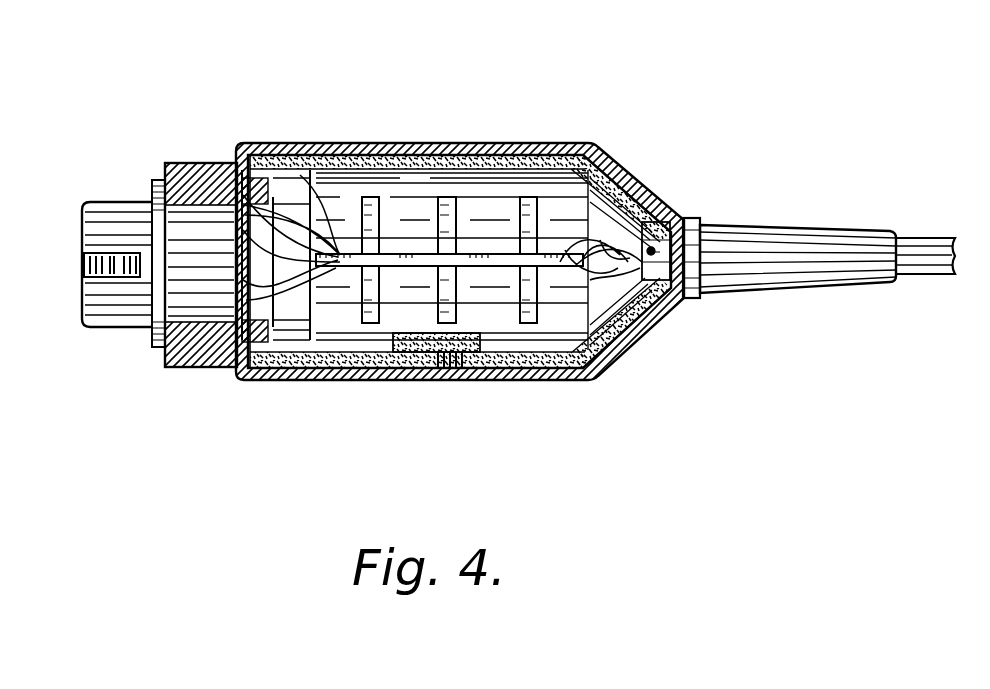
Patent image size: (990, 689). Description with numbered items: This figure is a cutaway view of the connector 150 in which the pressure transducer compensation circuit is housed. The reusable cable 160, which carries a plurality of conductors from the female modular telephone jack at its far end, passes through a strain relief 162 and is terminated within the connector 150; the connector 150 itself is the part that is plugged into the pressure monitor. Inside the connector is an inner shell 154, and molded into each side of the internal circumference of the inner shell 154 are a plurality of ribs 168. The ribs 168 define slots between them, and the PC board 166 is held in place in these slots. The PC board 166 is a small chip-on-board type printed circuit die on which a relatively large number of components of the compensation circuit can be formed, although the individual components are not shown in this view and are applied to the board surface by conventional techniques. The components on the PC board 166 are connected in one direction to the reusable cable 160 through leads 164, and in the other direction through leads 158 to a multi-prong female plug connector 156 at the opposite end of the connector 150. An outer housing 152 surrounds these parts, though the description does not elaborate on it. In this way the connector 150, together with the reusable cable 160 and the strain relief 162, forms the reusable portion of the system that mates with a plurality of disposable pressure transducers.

The connector 150 is at (540, 113).
The housing shell 152 is at (630, 178).
The inner shell 154 is at (311, 380).
The multi-prong female plug connector 156 is at (120, 330).
The leads 158 is at (242, 166).
The reusable cable 160 is at (917, 237).
The strain relief 162 is at (710, 220).
The leads 164 is at (643, 337).
The printed circuit board 166 is at (554, 372).
The ribs 168 is at (371, 197).